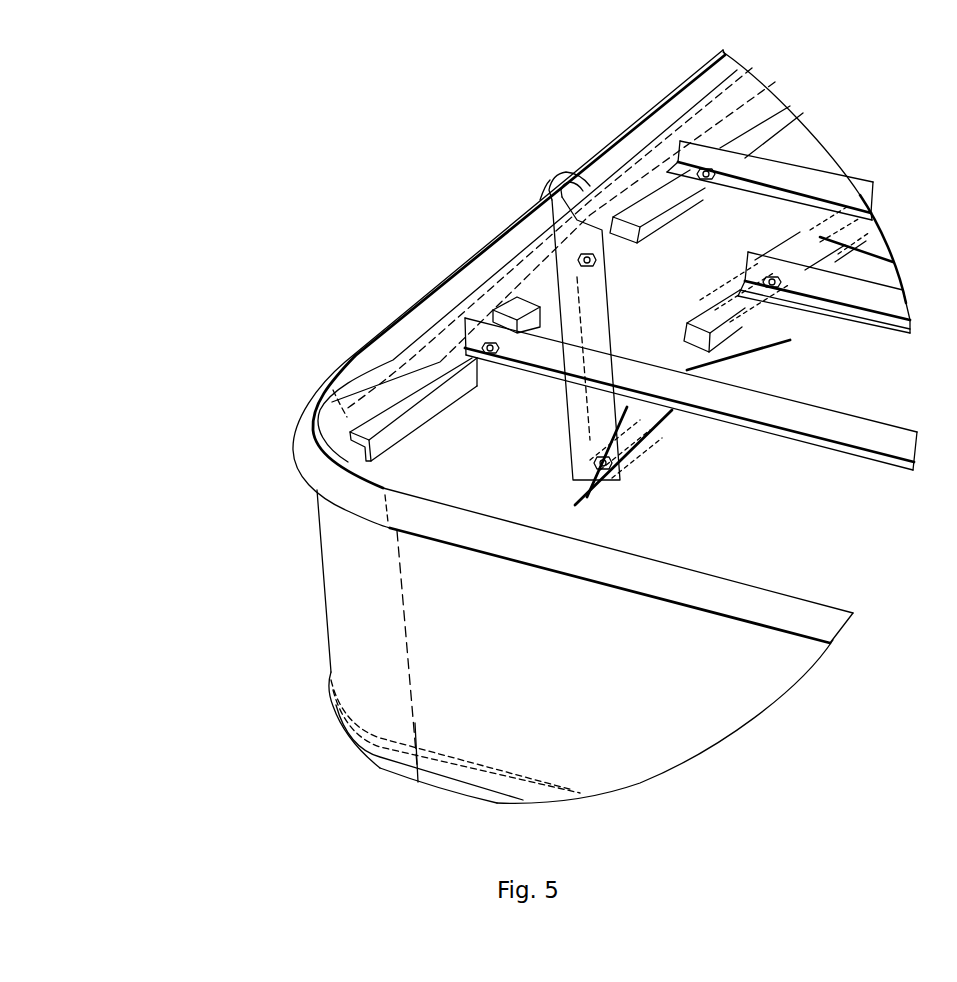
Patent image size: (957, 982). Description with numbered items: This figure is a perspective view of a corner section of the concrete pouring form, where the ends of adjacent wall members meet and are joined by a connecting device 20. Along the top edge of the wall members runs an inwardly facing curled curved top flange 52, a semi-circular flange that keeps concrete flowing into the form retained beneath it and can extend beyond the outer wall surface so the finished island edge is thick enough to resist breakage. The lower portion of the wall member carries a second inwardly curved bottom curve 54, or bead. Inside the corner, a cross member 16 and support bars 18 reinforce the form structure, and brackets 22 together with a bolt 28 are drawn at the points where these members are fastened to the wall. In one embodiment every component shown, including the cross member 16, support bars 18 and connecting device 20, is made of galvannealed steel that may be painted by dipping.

The cross member 16 is at (895, 452).
The support bar 18 is at (750, 122).
The connecting device 20 is at (620, 453).
The cross bracket 22 is at (347, 434).
The bolt 28 is at (491, 364).
The curled curved top flange 52 is at (293, 455).
The bottom curve 54 is at (340, 733).